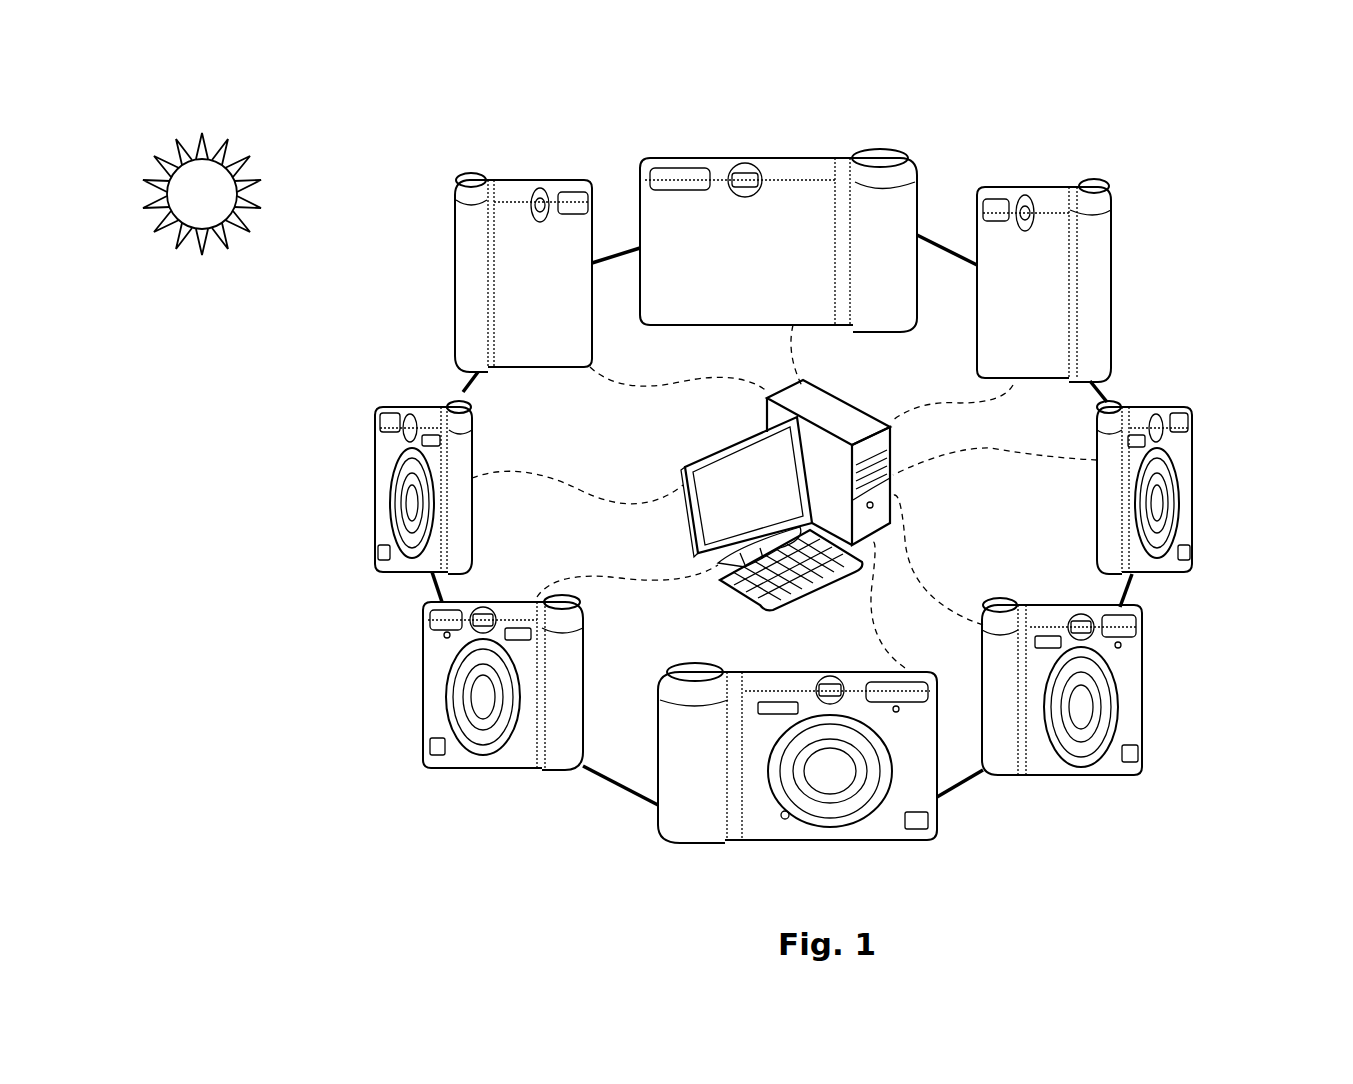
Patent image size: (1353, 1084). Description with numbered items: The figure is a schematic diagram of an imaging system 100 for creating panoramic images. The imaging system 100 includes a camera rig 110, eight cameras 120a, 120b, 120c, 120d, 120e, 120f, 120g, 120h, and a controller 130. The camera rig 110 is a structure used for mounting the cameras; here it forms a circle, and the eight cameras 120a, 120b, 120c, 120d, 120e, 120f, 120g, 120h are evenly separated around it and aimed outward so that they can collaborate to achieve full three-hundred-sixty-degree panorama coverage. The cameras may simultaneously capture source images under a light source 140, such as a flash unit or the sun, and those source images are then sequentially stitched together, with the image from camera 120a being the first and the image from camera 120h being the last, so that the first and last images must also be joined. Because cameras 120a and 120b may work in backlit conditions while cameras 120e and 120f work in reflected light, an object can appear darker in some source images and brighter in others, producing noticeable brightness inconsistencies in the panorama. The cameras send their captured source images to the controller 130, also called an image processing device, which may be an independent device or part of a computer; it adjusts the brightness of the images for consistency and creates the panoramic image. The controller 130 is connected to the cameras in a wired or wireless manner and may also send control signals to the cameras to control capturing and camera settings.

The imaging system 100 is at (938, 114).
The camera rig 110 is at (455, 400).
The camera 120a is at (523, 262).
The camera 120b is at (391, 487).
The camera 120c is at (503, 700).
The camera 120d is at (797, 770).
The camera 120e is at (1062, 703).
The camera 120f is at (1183, 487).
The camera 120g is at (1078, 280).
The camera 120h is at (778, 229).
The controller 130 is at (843, 397).
The light source 140 is at (262, 178).